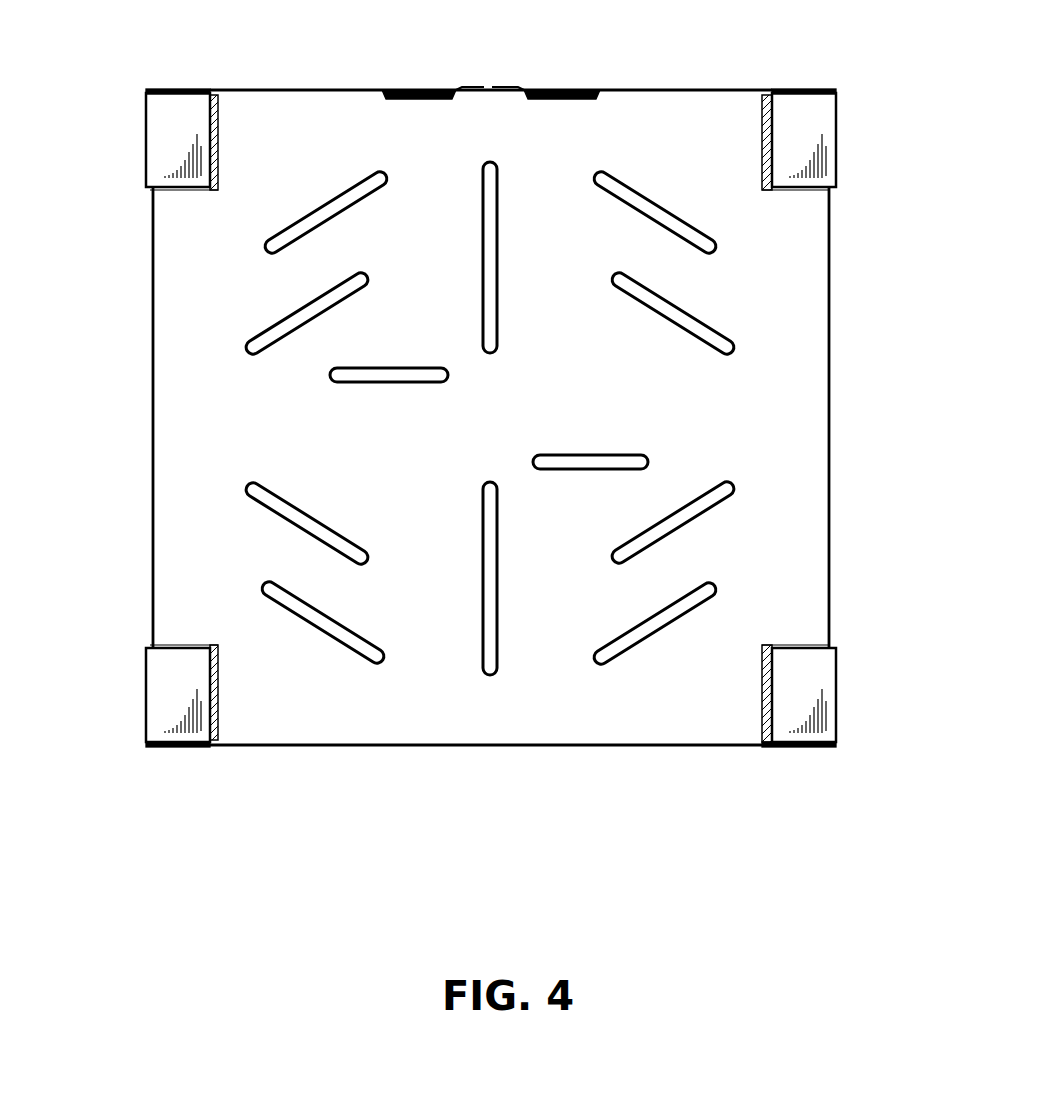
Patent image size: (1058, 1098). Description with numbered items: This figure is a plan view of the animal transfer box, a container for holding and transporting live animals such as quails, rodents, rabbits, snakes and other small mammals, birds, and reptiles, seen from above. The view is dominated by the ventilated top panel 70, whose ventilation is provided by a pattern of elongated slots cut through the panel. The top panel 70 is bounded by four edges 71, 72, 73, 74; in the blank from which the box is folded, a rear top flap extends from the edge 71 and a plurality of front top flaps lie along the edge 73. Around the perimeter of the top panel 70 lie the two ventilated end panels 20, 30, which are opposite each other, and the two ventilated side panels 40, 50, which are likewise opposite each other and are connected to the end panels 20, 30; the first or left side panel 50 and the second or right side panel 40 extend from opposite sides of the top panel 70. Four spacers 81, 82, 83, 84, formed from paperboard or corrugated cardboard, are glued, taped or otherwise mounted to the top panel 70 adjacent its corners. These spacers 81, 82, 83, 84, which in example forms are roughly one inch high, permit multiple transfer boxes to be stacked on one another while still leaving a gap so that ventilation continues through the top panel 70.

The ventilated end panel 20 is at (434, 76).
The ventilated end panel 30 is at (492, 774).
The second or right side panel 40 is at (126, 310).
The first or left side panel 50 is at (860, 398).
The top panel 70 is at (536, 418).
The edge of top panel 71 is at (613, 744).
The edge of top panel 72 is at (828, 457).
The edge of top panel 73 is at (312, 92).
The edge of top panel 74 is at (154, 437).
The spacer 81 is at (802, 668).
The spacer 82 is at (814, 114).
The spacer 83 is at (176, 138).
The spacer 84 is at (172, 693).